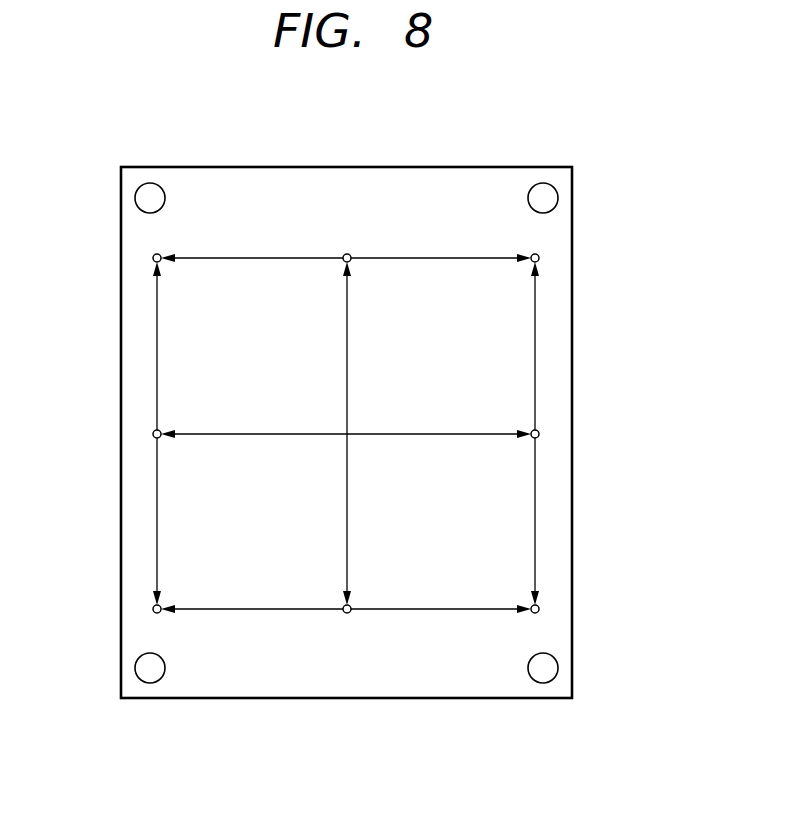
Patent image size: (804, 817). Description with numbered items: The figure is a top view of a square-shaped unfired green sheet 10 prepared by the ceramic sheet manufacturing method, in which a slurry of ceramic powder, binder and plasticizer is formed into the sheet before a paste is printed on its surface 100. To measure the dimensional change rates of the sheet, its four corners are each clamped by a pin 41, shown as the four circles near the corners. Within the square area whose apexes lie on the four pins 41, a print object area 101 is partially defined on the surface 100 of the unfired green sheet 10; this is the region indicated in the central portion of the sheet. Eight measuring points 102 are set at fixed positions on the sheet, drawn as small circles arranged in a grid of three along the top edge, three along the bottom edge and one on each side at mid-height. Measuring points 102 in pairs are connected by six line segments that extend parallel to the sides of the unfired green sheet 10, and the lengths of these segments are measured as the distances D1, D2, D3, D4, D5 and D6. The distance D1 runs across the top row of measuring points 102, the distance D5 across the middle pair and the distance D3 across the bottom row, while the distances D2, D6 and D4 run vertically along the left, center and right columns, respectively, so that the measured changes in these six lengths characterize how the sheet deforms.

The unfired green sheet 10 is at (460, 146).
The pin 41 is at (548, 195).
The surface 100 is at (485, 557).
The print object area 101 is at (432, 338).
The measuring point 102 is at (539, 256).
The distance D1 is at (293, 257).
The distance D2 is at (156, 375).
The distance D3 is at (283, 610).
The distance D4 is at (537, 480).
The distance D5 is at (437, 433).
The distance D6 is at (347, 505).